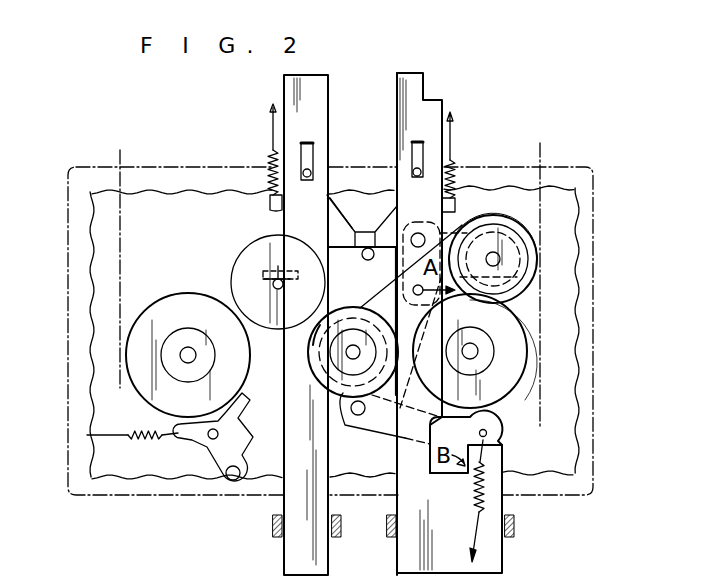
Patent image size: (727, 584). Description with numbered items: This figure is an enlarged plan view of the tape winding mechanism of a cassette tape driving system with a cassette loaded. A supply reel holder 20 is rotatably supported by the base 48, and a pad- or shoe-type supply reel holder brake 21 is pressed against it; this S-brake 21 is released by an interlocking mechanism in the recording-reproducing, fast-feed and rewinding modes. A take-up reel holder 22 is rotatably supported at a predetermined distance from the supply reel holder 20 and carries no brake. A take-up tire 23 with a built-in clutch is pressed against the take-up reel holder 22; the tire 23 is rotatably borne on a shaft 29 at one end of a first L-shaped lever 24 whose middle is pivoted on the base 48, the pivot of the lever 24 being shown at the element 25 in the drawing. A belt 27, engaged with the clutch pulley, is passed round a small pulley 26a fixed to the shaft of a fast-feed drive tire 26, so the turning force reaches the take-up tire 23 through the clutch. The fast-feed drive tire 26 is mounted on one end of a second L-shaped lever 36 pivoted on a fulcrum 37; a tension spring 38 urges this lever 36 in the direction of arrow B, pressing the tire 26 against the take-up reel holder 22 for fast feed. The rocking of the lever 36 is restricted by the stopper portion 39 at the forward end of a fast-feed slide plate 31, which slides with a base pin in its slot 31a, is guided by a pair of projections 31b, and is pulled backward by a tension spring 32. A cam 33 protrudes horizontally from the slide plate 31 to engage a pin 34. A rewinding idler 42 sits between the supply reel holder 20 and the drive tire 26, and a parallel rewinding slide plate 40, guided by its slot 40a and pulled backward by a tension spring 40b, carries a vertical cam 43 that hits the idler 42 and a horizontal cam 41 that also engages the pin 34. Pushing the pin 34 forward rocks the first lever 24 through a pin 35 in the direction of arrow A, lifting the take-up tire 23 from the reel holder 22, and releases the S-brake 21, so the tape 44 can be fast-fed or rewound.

The supply reel holder 20 is at (163, 307).
The supply reel holder brake 21 is at (245, 453).
The take-up reel holder 22 is at (512, 380).
The take-up tire 23 is at (510, 232).
The first L-shaped lever 24 is at (452, 229).
The pin hole 25 is at (418, 233).
The fast-feed drive tire 26 is at (320, 374).
The small pulley 26a is at (315, 325).
The belt 27 is at (386, 280).
The shaft 29 is at (500, 262).
The fast-feed slide plate 31 is at (413, 92).
The slot 31a is at (425, 140).
The projections 31b is at (502, 534).
The tension spring 32 is at (452, 157).
The cam 33 is at (389, 200).
The pin 34 is at (365, 259).
The pin 35 is at (421, 345).
The second L-shaped lever 36 is at (378, 422).
The fulcrum 37 is at (346, 425).
The tension spring 38 is at (476, 504).
The stopper portion 39 is at (500, 446).
The rewinding slide plate 40 is at (328, 93).
The slot 40a is at (313, 153).
The tension spring 40b is at (273, 142).
The cam 41 is at (346, 228).
The rewinding idler 42 is at (263, 247).
The cam 43 is at (260, 273).
The tape 44 is at (538, 243).
The base 48 is at (577, 395).